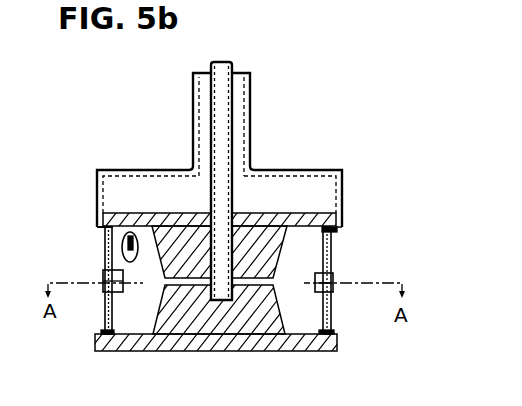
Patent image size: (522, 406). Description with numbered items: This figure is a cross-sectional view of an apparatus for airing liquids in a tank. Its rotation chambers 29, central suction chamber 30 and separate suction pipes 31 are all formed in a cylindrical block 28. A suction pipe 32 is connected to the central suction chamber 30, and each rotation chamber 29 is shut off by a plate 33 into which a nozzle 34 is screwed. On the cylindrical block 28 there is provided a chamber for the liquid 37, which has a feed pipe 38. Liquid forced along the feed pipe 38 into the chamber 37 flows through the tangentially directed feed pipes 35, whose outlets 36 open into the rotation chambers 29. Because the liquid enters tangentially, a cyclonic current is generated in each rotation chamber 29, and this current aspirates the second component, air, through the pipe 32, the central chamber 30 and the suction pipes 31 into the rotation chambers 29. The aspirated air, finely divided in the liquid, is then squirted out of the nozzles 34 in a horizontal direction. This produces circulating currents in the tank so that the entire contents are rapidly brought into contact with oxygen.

The cylindrical block 28 is at (330, 231).
The rotation chamber 29 is at (137, 332).
The central suction chamber 30 is at (221, 312).
The suction pipe 31 is at (264, 283).
The suction pipe 32 is at (222, 70).
The plate 33 is at (331, 251).
The nozzle 34 is at (331, 290).
The tangentially directed feed pipe 35 is at (99, 227).
The outlet 36 is at (122, 246).
The chamber for the liquid 37 is at (302, 190).
The feed pipe 38 is at (248, 128).